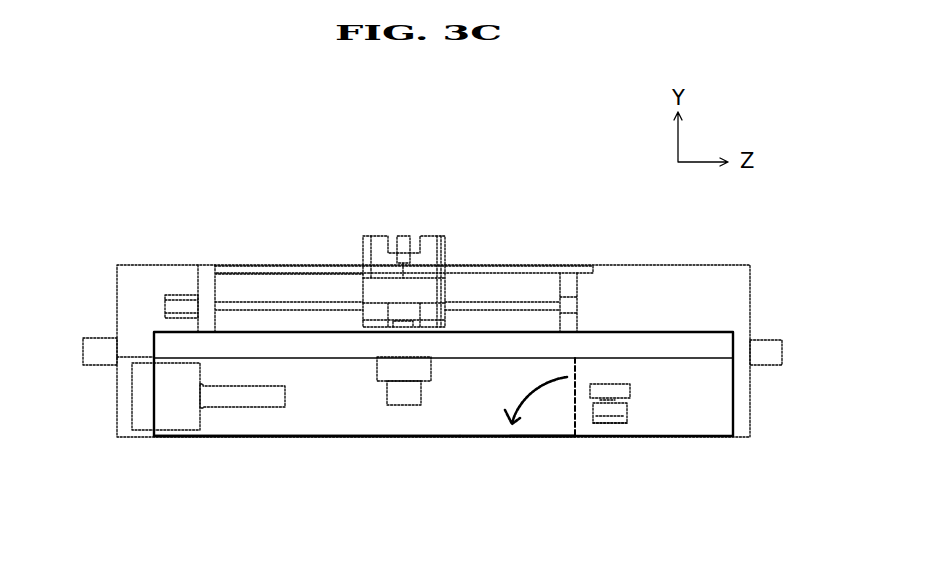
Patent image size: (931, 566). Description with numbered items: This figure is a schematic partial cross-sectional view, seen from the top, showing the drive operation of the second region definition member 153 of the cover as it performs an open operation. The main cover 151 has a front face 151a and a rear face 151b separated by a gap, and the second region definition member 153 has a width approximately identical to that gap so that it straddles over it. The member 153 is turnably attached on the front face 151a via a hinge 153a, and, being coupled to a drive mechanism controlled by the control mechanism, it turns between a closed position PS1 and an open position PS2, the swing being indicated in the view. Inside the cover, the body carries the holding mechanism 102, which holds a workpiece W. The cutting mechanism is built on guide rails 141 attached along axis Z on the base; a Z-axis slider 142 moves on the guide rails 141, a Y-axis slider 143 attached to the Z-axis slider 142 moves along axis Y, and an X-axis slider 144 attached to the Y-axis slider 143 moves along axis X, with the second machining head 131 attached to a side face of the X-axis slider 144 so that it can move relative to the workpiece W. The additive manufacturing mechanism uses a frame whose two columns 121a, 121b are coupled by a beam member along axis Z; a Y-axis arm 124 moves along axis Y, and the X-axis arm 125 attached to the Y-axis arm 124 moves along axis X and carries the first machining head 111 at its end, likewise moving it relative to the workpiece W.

The holding mechanism 102 is at (143, 415).
The first machining head 111 is at (620, 400).
The column 121a is at (93, 347).
The column 121b is at (767, 347).
The Y-axis arm 124 is at (602, 388).
The X-axis arm 125 is at (610, 420).
The second machining head 131 is at (390, 390).
The guide rails 141 is at (527, 268).
The Z-axis slider 142 is at (427, 245).
The Y-axis slider 143 is at (377, 292).
The X-axis slider 144 is at (377, 367).
The main cover 151 is at (707, 437).
The front face 151a is at (297, 438).
The rear face 151b is at (293, 357).
The second region definition member 153 is at (500, 436).
The hinge 153a is at (573, 437).
The workpiece W is at (242, 397).
The closed position PS1 is at (572, 368).
The open position PS2 is at (532, 438).